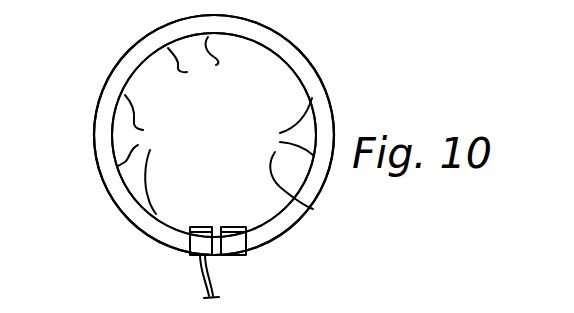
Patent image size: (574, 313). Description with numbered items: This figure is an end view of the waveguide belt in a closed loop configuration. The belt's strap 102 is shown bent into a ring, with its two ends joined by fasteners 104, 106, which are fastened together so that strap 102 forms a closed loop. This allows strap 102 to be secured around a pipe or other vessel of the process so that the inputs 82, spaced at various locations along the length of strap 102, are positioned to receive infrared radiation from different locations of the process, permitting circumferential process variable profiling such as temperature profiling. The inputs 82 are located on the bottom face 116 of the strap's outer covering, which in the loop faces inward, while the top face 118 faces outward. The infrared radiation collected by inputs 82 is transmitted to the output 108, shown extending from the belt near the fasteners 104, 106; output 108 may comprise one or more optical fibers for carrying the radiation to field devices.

The inputs 82 is at (187, 72).
The strap 102 is at (313, 209).
The fastener 104 is at (202, 228).
The fastener 106 is at (238, 228).
The output 108 is at (213, 272).
The bottom face 116 is at (131, 79).
The top face 118 is at (100, 98).